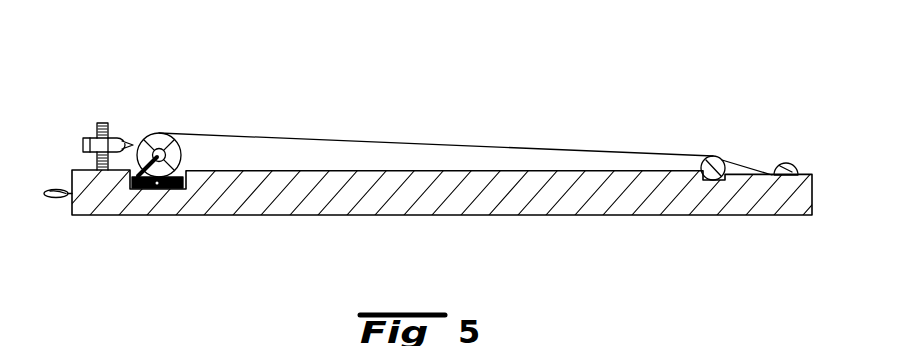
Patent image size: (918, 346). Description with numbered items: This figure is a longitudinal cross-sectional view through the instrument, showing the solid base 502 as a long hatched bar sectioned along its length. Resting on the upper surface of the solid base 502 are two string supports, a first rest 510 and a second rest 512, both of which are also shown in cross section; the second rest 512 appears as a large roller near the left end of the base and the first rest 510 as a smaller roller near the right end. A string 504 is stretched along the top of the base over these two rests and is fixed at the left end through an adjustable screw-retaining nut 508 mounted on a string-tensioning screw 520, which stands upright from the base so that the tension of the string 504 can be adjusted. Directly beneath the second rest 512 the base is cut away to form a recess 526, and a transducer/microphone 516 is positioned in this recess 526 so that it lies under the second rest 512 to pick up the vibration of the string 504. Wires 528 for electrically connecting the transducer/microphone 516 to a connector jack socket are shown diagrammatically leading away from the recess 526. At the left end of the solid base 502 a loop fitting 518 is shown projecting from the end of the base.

The solid base 502 is at (450, 200).
The string 504 is at (533, 150).
The adjustable screw-retaining nut 508 is at (83, 138).
The first rest 510 is at (713, 156).
The second rest 512 is at (163, 138).
The transducer/microphone 516 is at (155, 188).
The loop fitting 518 is at (50, 198).
The string-tensioning screw 520 is at (102, 122).
The recess 526 is at (190, 189).
The wires 528 is at (138, 180).